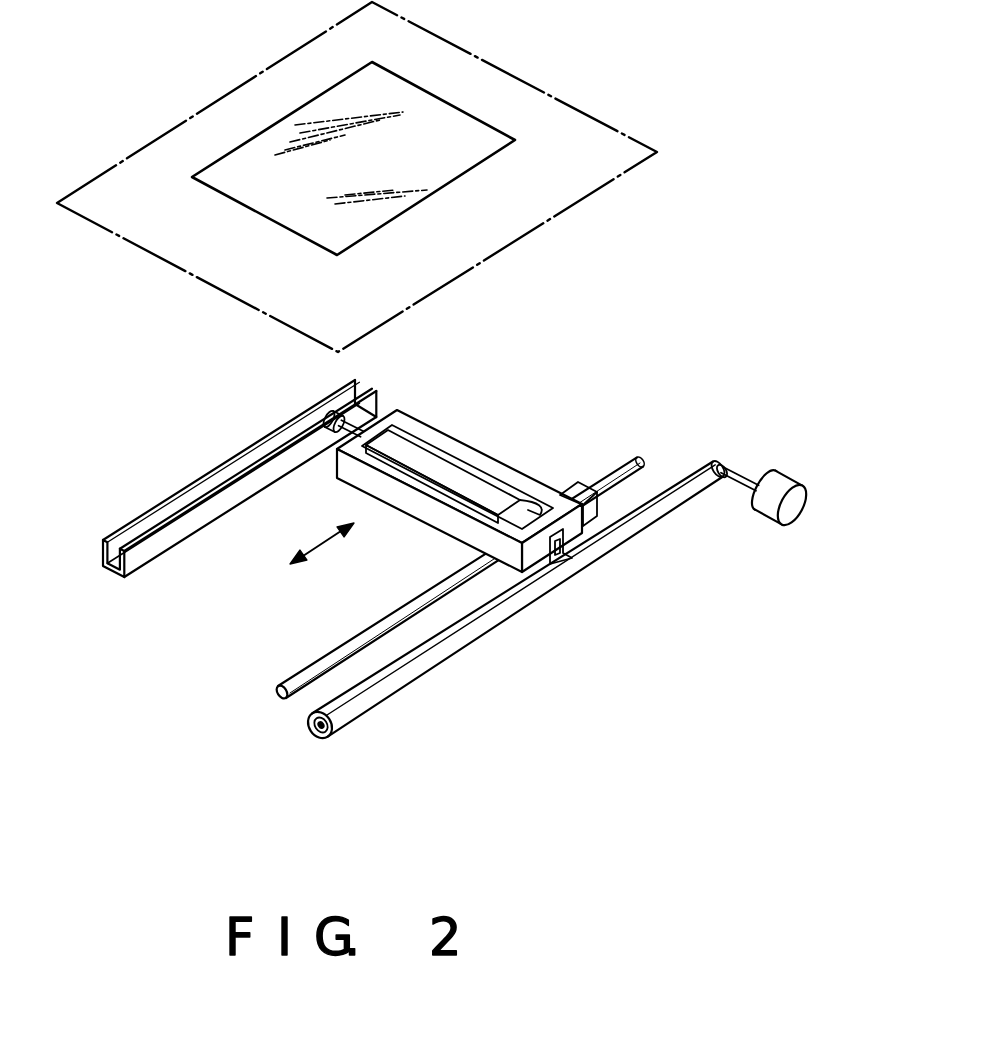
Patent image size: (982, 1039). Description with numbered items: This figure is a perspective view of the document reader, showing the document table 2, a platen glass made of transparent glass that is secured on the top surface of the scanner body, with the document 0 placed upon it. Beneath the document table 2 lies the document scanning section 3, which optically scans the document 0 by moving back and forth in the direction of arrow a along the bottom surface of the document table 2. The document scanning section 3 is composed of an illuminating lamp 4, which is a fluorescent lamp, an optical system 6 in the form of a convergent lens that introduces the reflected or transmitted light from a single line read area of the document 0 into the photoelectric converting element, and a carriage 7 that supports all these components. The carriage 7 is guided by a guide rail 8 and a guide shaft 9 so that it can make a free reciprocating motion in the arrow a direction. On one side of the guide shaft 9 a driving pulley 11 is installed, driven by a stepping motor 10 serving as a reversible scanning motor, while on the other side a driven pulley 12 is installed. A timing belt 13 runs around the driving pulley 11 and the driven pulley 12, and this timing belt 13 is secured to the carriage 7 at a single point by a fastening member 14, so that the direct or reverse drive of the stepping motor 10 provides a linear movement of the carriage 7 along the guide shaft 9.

The document 0 is at (490, 118).
The document table 2 is at (637, 137).
The document scanning section 3 is at (471, 461).
The illuminating lamp 4 is at (454, 445).
The optical system 6 is at (392, 455).
The carriage 7 is at (427, 500).
The guide rail 8 is at (190, 494).
The guide shaft 9 is at (308, 662).
The stepping motor 10 is at (778, 484).
The driving pulley 11 is at (725, 460).
The driven pulley 12 is at (327, 730).
The timing belt 13 is at (440, 662).
The fastening member 14 is at (575, 552).
The arrow a direction a is at (322, 541).